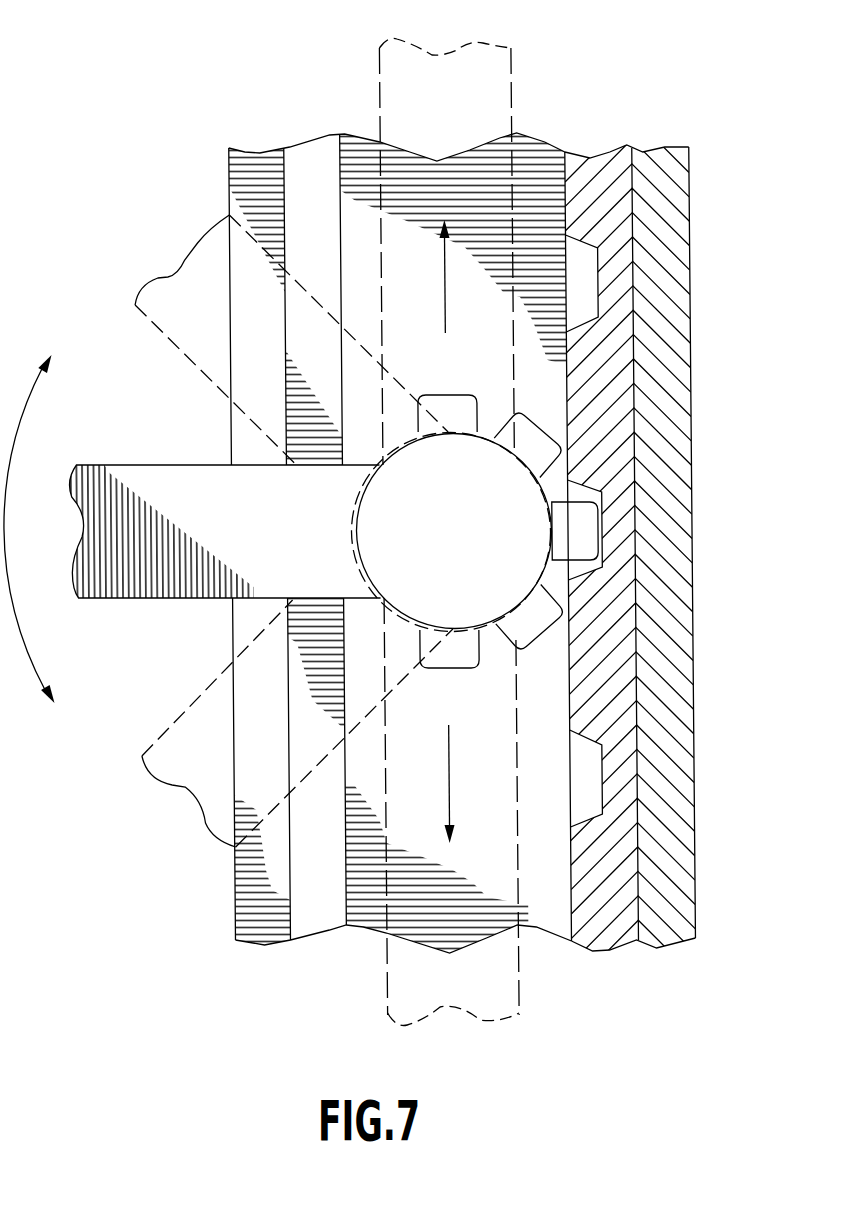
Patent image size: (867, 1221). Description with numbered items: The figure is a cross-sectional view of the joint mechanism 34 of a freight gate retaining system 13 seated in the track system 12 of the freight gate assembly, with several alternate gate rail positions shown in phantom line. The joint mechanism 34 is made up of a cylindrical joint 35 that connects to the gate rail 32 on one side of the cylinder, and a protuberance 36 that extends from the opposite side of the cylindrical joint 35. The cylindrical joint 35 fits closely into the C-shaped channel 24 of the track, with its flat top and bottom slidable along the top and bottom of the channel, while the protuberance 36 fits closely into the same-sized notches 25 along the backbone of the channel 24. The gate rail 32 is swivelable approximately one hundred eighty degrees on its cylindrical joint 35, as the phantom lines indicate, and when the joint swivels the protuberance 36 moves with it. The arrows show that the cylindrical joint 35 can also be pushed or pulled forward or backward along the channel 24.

The track system 12 is at (606, 127).
The freight gate retaining system 13 is at (168, 260).
The C-shaped channel 24 is at (550, 929).
The notches 25 is at (590, 280).
The gate rail 32 is at (276, 545).
The joint mechanism 34 is at (478, 385).
The cylindrical joint 35 is at (466, 545).
The protuberance 36 is at (580, 530).